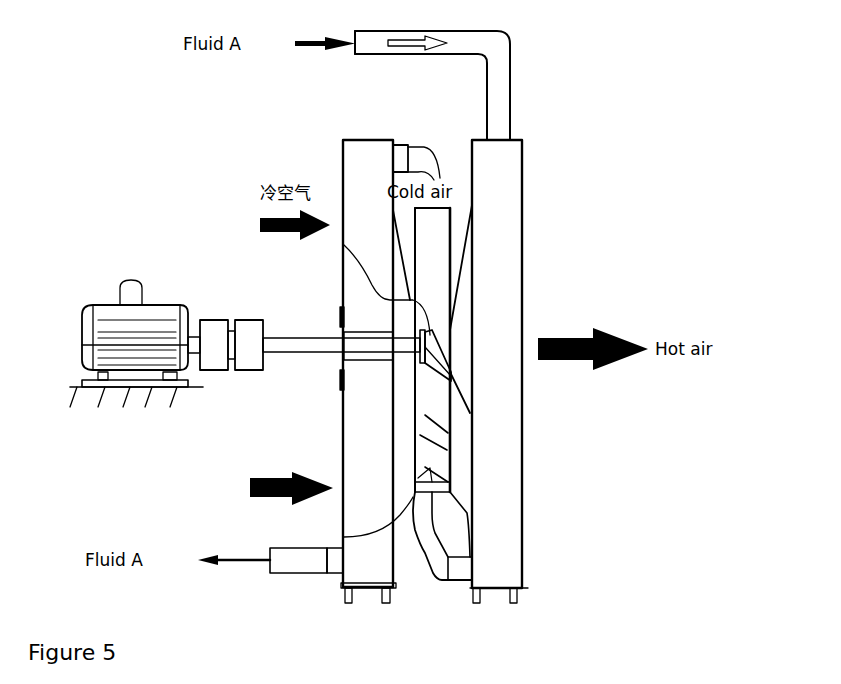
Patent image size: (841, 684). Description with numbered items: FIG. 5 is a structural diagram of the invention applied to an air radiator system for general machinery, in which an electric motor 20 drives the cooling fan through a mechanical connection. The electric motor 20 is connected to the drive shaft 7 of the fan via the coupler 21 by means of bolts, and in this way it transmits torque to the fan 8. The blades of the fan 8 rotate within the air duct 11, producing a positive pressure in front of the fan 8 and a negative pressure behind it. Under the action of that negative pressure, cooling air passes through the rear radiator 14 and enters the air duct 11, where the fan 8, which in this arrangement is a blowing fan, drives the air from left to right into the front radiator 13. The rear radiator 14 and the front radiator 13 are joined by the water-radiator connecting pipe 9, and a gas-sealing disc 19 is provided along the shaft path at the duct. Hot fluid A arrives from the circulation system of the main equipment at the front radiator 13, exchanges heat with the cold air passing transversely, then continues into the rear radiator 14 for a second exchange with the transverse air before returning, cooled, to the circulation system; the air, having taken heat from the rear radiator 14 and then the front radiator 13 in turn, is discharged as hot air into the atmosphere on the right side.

The drive shaft of the fan 7 is at (308, 343).
The fan 8 is at (442, 405).
The water-radiator connecting pipe 9 is at (468, 190).
The air duct 11 is at (438, 242).
The front radiator 13 is at (490, 158).
The rear radiator 14 is at (370, 185).
The gas-sealing disc 19 is at (397, 325).
The electric motor 20 is at (175, 315).
The coupler 21 is at (247, 330).